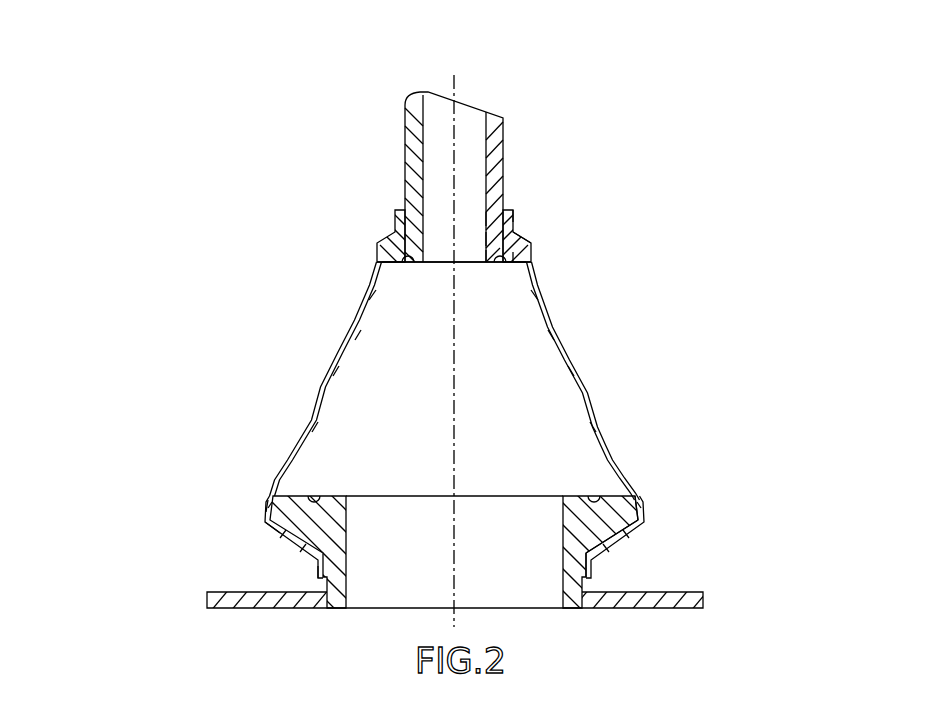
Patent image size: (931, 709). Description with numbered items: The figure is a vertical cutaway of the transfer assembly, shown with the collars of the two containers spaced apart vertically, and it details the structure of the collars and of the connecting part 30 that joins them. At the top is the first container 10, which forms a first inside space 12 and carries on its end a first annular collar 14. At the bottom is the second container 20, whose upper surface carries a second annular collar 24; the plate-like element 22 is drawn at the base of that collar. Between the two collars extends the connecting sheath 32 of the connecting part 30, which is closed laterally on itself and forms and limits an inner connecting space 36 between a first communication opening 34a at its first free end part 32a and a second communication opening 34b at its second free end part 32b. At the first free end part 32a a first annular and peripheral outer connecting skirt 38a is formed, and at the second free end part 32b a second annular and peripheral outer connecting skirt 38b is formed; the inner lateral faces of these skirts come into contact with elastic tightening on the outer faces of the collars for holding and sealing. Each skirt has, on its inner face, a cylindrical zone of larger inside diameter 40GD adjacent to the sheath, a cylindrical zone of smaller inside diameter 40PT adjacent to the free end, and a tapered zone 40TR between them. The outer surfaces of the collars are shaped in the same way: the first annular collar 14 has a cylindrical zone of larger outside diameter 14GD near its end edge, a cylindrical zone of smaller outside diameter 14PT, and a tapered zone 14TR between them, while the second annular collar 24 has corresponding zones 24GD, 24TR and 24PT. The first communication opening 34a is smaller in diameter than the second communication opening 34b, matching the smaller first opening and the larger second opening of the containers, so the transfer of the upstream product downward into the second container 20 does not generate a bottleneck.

The first container 10 is at (448, 327).
The first inside space 12 is at (467, 140).
The first annular collar 14 is at (472, 164).
The cylindrical zone of smaller outside diameter of the first annular collar 14PT is at (483, 217).
The tapered zone of the first annular collar 14TR is at (483, 240).
The cylindrical zone of larger outside diameter of the first annular collar 14GD is at (483, 258).
The second container 20 is at (476, 557).
The base plate 22 is at (270, 630).
The second annular collar 24 is at (454, 550).
The cylindrical zone of larger outside diameter of the second annular collar 24GD is at (618, 506).
The tapered zone of the second annular collar 24TR is at (578, 537).
The cylindrical zone of smaller outside diameter of the second annular collar 24PT is at (578, 583).
The connecting part 30 is at (407, 361).
The connecting sheath 32 is at (449, 381).
The first free end part 32a is at (359, 226).
The second free end part 32b is at (423, 490).
The first communication opening 34a is at (470, 273).
The second communication opening 34b is at (520, 490).
The inner connecting space 36 is at (358, 403).
The first annular and peripheral outer connecting skirt 38a is at (377, 258).
The second annular and peripheral outer connecting skirt 38b is at (642, 522).
The cylindrical zone of larger inside diameter 40GD is at (513, 254).
The tapered zone 40TR is at (518, 233).
The cylindrical zone of smaller inside diameter 40PT is at (515, 212).